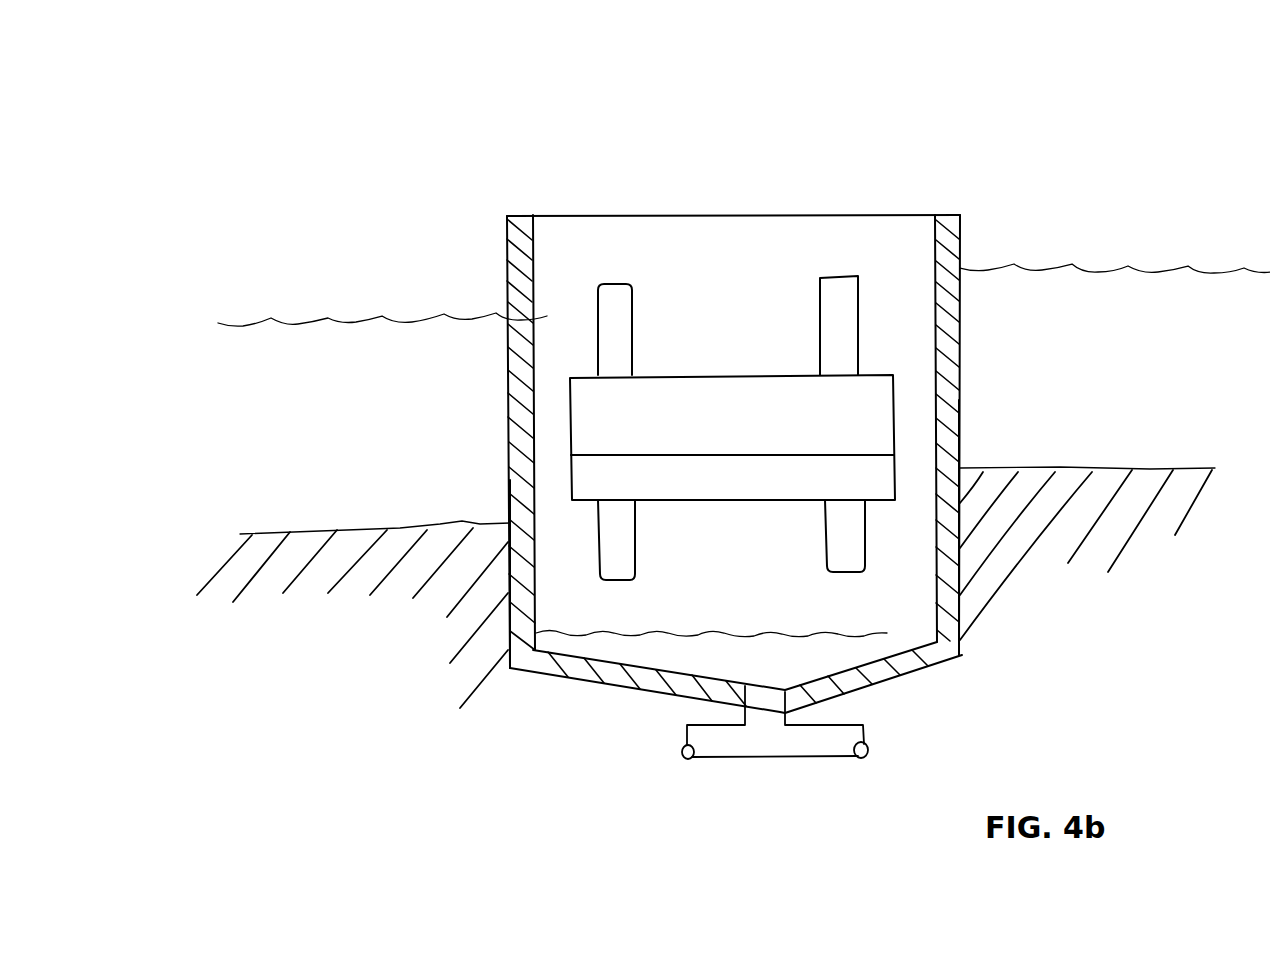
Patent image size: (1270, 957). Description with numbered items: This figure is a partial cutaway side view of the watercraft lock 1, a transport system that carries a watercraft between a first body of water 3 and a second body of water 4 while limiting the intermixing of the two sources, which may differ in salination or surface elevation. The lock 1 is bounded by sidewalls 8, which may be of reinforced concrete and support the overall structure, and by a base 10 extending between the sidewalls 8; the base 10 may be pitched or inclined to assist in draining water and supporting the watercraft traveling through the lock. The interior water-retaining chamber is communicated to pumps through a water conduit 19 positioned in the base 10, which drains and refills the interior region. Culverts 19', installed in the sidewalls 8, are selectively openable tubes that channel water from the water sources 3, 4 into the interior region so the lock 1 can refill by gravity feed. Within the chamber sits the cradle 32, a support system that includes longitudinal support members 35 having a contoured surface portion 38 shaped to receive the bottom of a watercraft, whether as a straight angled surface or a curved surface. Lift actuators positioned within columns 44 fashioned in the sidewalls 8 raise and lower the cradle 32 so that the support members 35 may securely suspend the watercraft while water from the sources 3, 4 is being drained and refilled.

The watercraft lock 1 is at (967, 177).
The first body of water 3 is at (1078, 318).
The second body of water 4 is at (390, 367).
The sidewall 8 is at (520, 320).
The base 10 is at (580, 668).
The water conduit 19 is at (735, 777).
The culvert 19' is at (738, 437).
The cradle 32 is at (580, 252).
The support member 35 is at (712, 405).
The contoured surface portion 38 is at (640, 417).
The column 44 is at (612, 303).